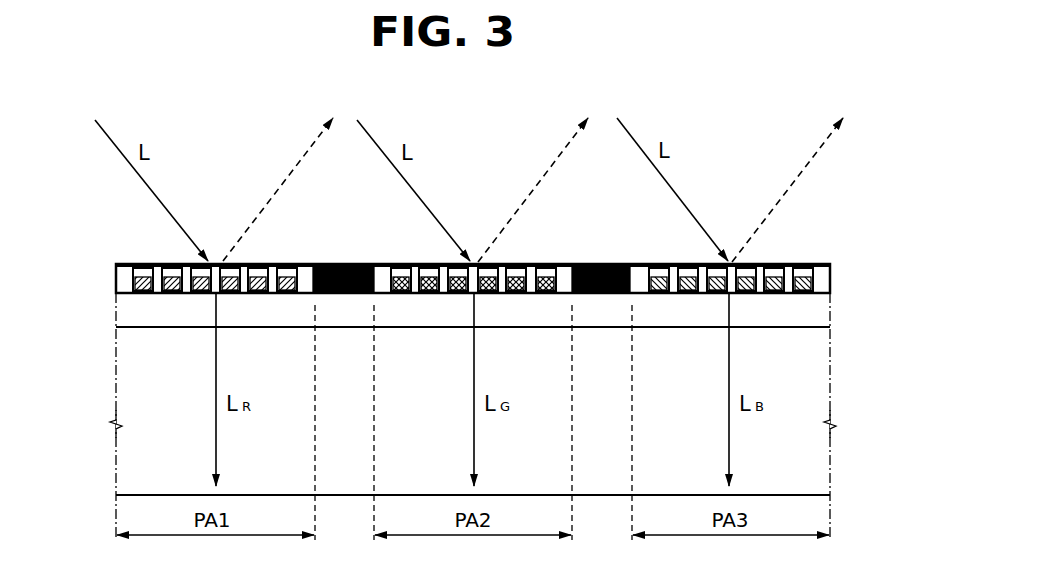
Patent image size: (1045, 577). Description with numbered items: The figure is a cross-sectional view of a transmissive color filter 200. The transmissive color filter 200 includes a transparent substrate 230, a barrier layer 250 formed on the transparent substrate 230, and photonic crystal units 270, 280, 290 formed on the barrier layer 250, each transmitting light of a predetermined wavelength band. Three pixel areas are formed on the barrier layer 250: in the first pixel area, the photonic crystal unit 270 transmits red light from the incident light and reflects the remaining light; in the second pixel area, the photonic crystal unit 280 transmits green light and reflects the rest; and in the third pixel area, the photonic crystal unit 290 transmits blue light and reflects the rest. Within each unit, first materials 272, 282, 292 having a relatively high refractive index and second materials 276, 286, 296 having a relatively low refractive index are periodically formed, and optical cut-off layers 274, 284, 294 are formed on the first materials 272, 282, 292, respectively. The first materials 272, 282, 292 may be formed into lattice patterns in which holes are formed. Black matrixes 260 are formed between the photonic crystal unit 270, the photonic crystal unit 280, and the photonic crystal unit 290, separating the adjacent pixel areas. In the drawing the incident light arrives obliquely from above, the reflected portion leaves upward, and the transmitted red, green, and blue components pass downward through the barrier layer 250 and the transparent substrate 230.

The transmissive color filter 200 is at (853, 161).
The transparent substrate 230 is at (120, 403).
The barrier layer 250 is at (120, 313).
The black matrix 260 is at (622, 263).
The photonic crystal unit 270 is at (190, 242).
The first material 272 is at (134, 283).
The optical cut-off layer 274 is at (138, 268).
The second material 276 is at (163, 264).
The photonic crystal unit 280 is at (470, 242).
The first material 282 is at (555, 282).
The optical cut-off layer 284 is at (548, 264).
The second material 286 is at (502, 268).
The photonic crystal unit 290 is at (756, 245).
The first material 292 is at (809, 283).
The optical cut-off layer 294 is at (806, 268).
The second material 296 is at (788, 263).